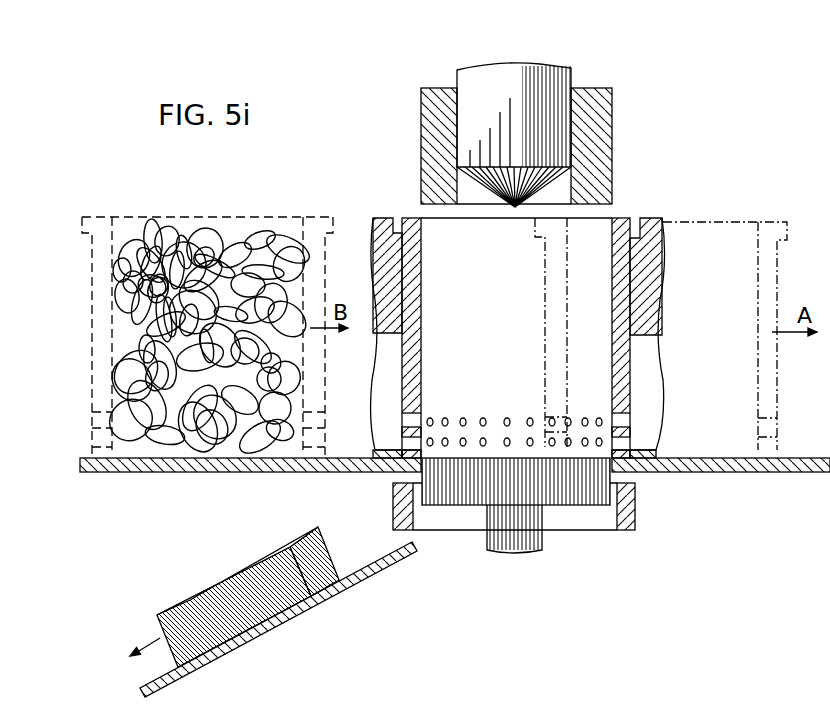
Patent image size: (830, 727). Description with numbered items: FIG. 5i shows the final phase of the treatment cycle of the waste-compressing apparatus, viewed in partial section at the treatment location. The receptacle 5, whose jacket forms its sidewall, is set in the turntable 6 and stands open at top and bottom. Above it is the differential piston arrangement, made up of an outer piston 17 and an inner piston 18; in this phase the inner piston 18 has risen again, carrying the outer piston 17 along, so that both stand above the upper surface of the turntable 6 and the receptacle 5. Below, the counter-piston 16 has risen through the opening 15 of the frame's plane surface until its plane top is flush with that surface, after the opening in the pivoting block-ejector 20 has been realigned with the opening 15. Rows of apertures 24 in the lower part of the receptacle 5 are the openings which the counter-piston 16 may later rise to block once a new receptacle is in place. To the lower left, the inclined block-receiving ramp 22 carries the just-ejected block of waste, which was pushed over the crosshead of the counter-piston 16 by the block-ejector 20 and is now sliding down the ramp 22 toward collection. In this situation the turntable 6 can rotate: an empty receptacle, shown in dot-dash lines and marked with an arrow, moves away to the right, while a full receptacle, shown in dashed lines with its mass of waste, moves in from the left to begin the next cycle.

The outer piston 17 is at (435, 108).
The inner piston 18 is at (510, 85).
The receptacle 5 is at (627, 220).
The turntable 6 is at (664, 222).
The apertures 24 is at (506, 438).
The opening 15 is at (627, 468).
The counter-piston 16 is at (572, 492).
The block-ejector 20 is at (637, 520).
The block-receiving ramp 22 is at (155, 680).